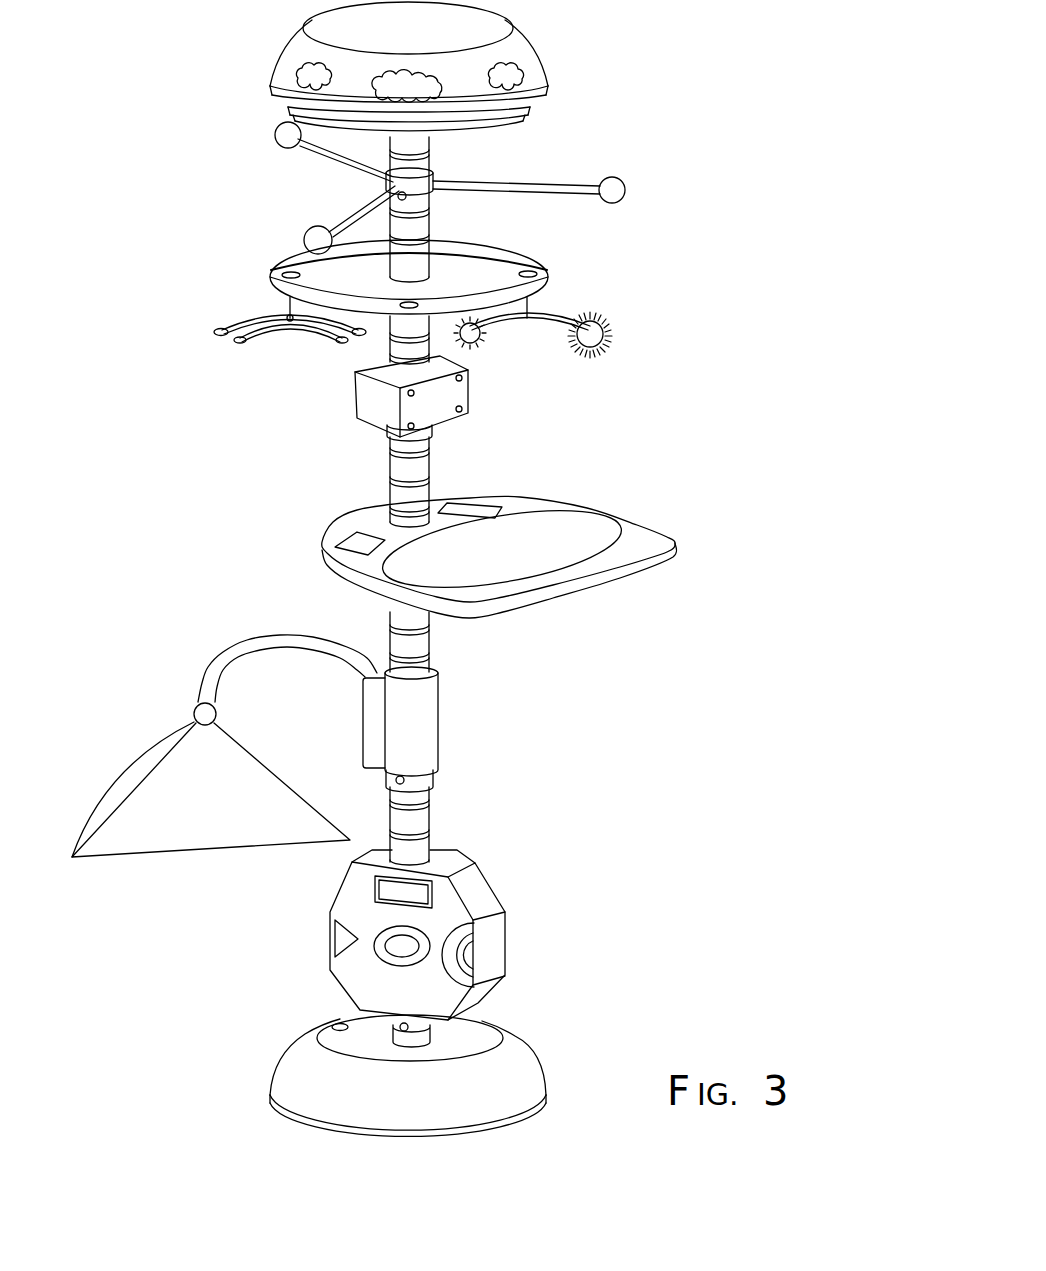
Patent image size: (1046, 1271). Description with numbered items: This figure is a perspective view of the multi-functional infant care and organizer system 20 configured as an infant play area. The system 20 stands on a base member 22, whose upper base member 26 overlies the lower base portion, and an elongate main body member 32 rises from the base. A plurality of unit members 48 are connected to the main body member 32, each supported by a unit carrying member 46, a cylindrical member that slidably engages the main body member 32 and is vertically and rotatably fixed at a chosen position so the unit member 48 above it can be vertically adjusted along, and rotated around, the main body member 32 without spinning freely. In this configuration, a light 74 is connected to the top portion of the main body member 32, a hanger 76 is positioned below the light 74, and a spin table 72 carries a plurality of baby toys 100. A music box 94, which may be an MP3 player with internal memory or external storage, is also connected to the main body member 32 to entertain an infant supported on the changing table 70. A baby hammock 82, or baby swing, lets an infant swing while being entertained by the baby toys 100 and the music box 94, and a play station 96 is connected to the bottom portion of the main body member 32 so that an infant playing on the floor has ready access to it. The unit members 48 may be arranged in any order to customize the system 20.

The multi-functional infant care and organizer system 20 is at (544, 501).
The base member 22 is at (460, 1064).
The upper base member 26 is at (516, 1032).
The main body member 32 is at (389, 463).
The unit carrying member 46 is at (437, 195).
The unit member 48 is at (284, 55).
The changing table 70 is at (640, 523).
The spin table 72 is at (558, 266).
The light 74 is at (549, 62).
The hanger 76 is at (631, 178).
The baby hammock 82 is at (196, 682).
The music box 94 is at (481, 391).
The play station 96 is at (500, 882).
The baby toys 100 is at (616, 318).